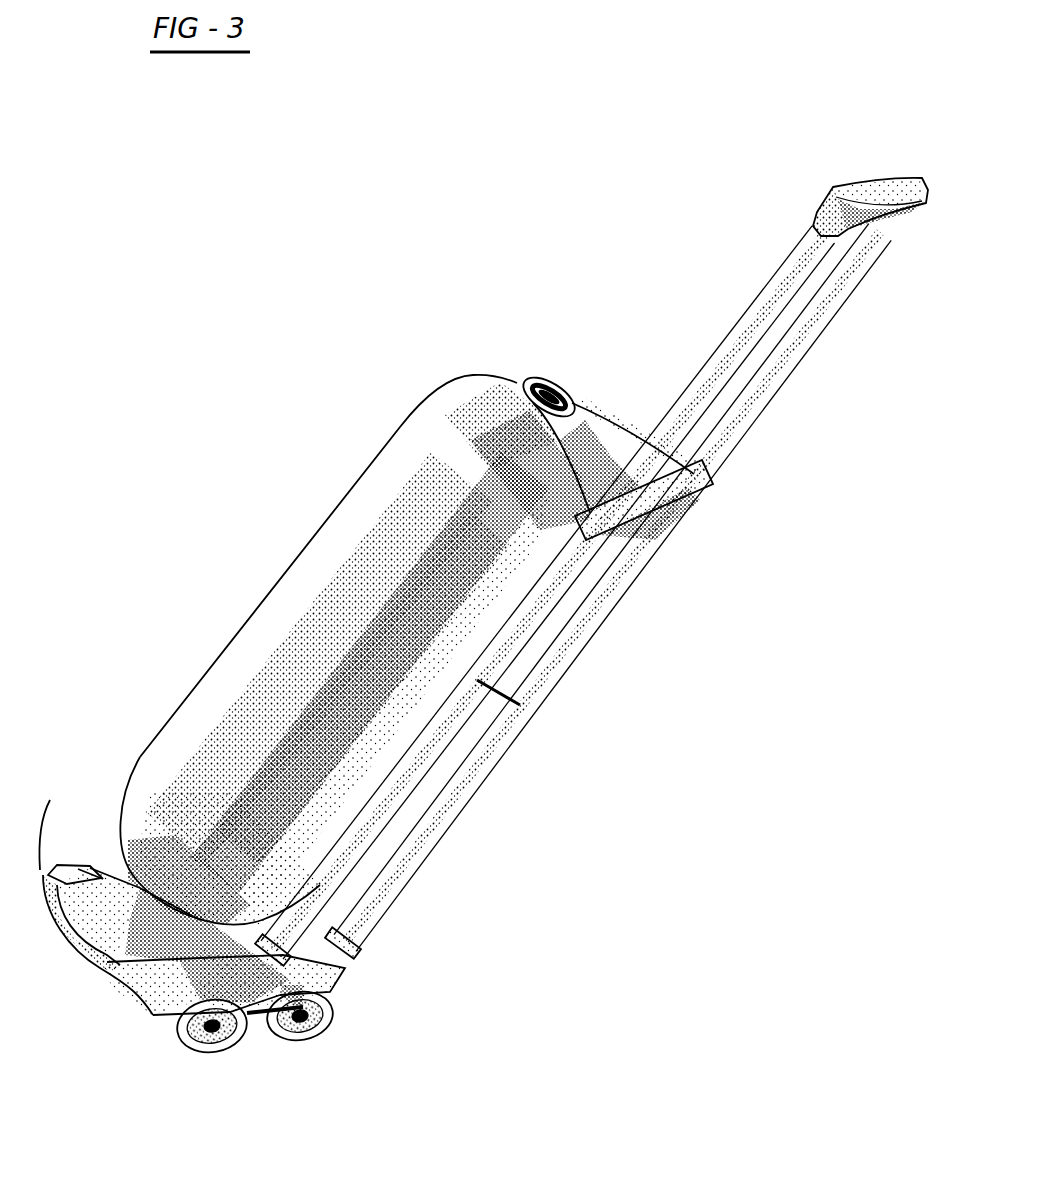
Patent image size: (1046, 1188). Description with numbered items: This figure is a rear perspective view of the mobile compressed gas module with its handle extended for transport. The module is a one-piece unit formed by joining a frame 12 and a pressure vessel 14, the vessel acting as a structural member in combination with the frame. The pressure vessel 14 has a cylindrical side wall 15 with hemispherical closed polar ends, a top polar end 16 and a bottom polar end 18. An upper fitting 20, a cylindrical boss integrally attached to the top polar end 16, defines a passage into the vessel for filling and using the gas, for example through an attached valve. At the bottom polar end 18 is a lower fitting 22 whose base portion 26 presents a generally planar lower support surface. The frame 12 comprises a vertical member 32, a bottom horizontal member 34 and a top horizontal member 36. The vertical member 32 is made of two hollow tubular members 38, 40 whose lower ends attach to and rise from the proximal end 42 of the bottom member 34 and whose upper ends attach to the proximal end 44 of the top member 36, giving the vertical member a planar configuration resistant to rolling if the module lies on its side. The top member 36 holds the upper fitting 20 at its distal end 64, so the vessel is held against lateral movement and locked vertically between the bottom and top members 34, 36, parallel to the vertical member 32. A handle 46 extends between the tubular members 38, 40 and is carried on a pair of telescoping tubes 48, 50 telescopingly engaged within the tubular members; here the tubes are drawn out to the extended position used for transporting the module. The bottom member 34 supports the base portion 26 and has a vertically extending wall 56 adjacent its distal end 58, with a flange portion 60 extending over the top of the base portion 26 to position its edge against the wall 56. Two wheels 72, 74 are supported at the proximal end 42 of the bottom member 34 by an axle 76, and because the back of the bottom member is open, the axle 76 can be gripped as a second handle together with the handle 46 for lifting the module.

The frame 12 is at (564, 570).
The pressure vessel 14 is at (356, 604).
The cylindrical side wall 15 is at (302, 588).
The top polar end 16 is at (482, 385).
The bottom polar end 18 is at (147, 788).
The upper fitting 20 is at (546, 380).
The lower fitting 22 is at (125, 868).
The base portion 26 is at (137, 908).
The vertical member 32 is at (466, 803).
The bottom horizontal member 34 is at (130, 1010).
The top horizontal member 36 is at (621, 424).
The tubular member 38 is at (505, 702).
The tubular member 40 is at (558, 664).
The proximal end of the bottom member 42 is at (335, 970).
The proximal end of the top member 44 is at (668, 520).
The handle 46 is at (875, 194).
The telescoping tube 48 is at (730, 340).
The telescoping tube 50 is at (800, 345).
The vertically extending wall 56 is at (43, 878).
The distal end of the bottom member 58 is at (65, 920).
The flange portion 60 is at (66, 866).
The distal end of the top member 64 is at (580, 398).
The wheel 72 is at (228, 1052).
The wheel 74 is at (330, 1012).
The axle 76 is at (262, 1012).